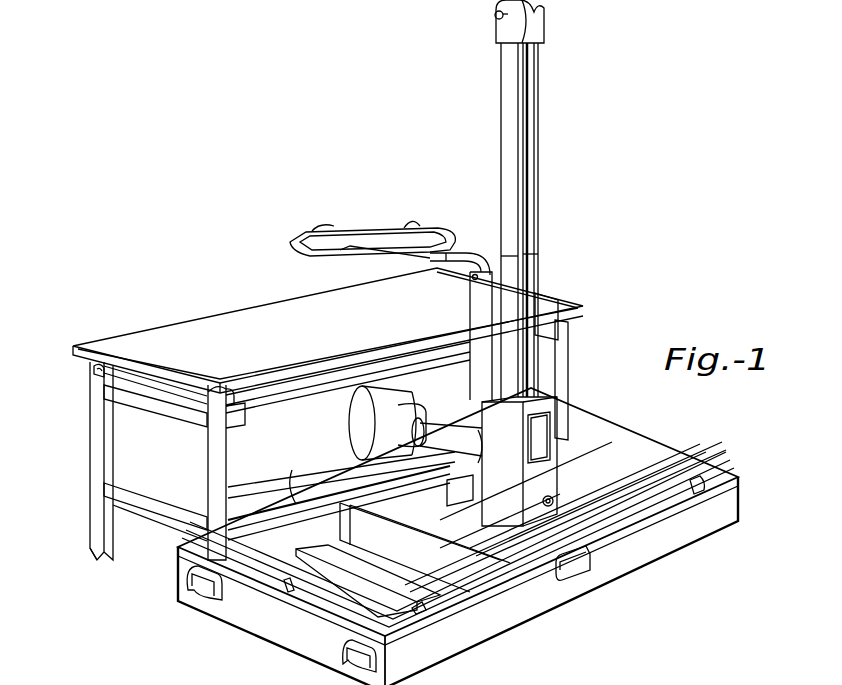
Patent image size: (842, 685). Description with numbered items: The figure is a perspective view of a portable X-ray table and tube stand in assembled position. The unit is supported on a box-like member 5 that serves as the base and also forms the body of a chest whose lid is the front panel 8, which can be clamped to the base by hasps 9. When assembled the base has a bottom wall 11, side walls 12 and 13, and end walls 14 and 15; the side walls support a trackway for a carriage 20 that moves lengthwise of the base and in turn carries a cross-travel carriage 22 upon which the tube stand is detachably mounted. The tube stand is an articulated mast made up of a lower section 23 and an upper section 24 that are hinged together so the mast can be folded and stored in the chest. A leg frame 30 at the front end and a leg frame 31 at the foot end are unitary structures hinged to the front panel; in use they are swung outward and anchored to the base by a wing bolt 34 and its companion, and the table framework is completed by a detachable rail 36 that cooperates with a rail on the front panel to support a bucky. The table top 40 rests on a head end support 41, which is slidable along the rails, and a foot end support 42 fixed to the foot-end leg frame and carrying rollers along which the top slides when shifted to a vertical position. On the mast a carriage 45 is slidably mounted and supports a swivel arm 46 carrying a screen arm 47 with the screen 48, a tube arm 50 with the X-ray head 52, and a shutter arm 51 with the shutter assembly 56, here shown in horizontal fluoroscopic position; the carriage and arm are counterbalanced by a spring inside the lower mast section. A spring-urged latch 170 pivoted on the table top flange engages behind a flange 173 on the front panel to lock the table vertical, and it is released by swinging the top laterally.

The box-like member 5 is at (235, 620).
The front panel 8 is at (125, 437).
The hasps 9 is at (288, 592).
The bottom wall 11 is at (390, 568).
The side wall 12 is at (296, 486).
The side wall 13 is at (665, 548).
The end wall 14 is at (300, 645).
The end wall 15 is at (672, 460).
The carriage 20 is at (572, 498).
The cross-travel carriage 22 is at (590, 522).
The lower section 23 is at (536, 272).
The upper section 24 is at (533, 178).
The leg frame 30 is at (570, 348).
The leg frame 31 is at (92, 470).
The wing bolt 34 is at (196, 374).
The detachable rail 36 is at (268, 416).
The table top 40 is at (233, 315).
The head end support 41 is at (560, 308).
The foot end support 42 is at (90, 371).
The carriage 45 is at (548, 464).
The swivel arm 46 is at (470, 304).
The screen arm 47 is at (456, 256).
The screen 48 is at (308, 233).
The tube arm 50 is at (455, 445).
The shutter arm 51 is at (432, 395).
The head 52 is at (352, 420).
The shutter assembly 56 is at (356, 356).
The latch 170 is at (122, 370).
The flange 173 is at (94, 550).